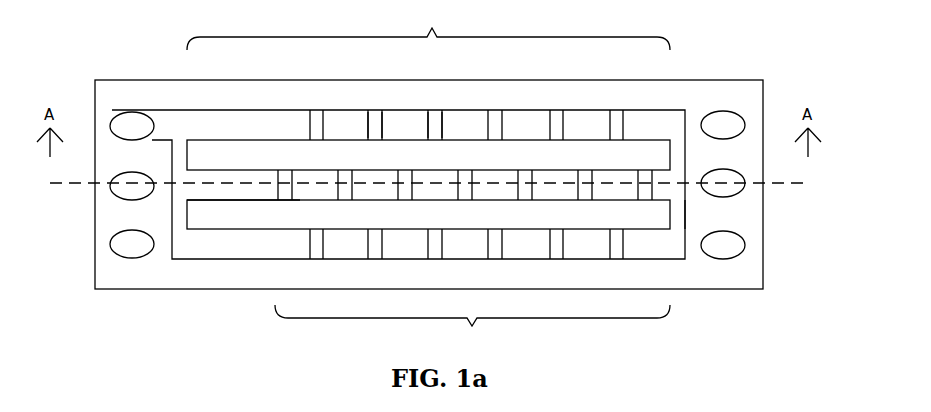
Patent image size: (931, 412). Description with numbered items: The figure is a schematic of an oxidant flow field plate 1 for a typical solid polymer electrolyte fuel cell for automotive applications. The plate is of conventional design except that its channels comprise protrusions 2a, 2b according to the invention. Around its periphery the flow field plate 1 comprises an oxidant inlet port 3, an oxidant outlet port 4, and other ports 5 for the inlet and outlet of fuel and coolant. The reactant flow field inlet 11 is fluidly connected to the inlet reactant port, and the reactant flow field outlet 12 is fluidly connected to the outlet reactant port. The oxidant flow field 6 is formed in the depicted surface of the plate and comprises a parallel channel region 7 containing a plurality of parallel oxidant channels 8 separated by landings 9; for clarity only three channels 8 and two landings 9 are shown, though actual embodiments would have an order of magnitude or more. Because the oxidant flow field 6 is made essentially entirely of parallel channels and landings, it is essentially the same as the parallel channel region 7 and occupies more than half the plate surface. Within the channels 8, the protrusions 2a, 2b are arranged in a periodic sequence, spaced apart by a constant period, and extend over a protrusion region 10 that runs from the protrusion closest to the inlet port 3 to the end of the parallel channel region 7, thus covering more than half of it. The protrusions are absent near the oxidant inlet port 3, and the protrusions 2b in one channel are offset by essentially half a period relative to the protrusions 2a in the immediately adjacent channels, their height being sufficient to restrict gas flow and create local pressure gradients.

The oxidant flow field plate 1 is at (796, 71).
The protrusions 2a is at (437, 126).
The protrusions 2b is at (343, 177).
The oxidant inlet port 3 is at (132, 128).
The oxidant outlet port 4 is at (722, 244).
The other ports 5 is at (133, 186).
The oxidant flow field 6 is at (245, 227).
The parallel channel region 7 is at (428, 29).
The parallel oxidant channels 8 is at (213, 213).
The landings 9 is at (650, 215).
The protrusion region 10 is at (472, 328).
The reactant flow field inlet 11 is at (172, 122).
The reactant flow field outlet 12 is at (698, 233).